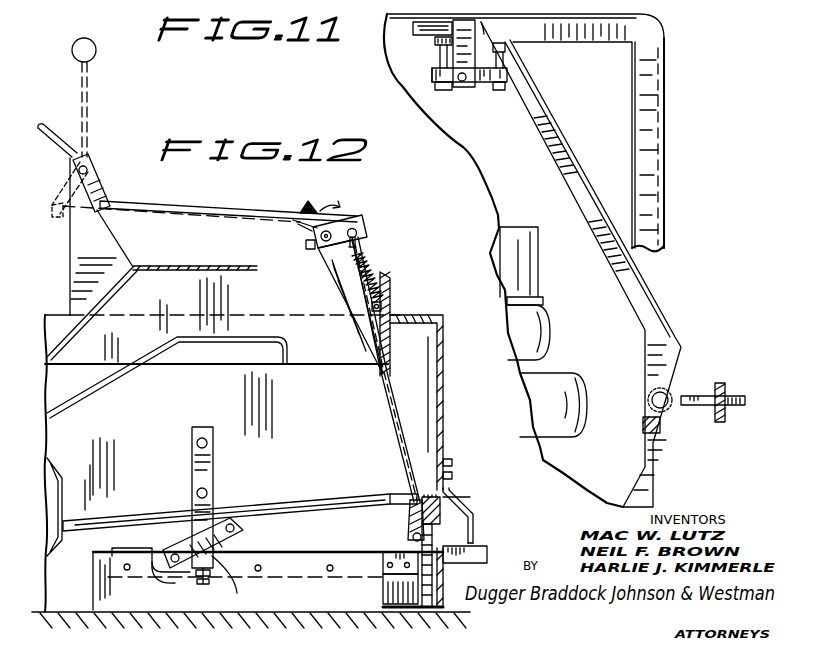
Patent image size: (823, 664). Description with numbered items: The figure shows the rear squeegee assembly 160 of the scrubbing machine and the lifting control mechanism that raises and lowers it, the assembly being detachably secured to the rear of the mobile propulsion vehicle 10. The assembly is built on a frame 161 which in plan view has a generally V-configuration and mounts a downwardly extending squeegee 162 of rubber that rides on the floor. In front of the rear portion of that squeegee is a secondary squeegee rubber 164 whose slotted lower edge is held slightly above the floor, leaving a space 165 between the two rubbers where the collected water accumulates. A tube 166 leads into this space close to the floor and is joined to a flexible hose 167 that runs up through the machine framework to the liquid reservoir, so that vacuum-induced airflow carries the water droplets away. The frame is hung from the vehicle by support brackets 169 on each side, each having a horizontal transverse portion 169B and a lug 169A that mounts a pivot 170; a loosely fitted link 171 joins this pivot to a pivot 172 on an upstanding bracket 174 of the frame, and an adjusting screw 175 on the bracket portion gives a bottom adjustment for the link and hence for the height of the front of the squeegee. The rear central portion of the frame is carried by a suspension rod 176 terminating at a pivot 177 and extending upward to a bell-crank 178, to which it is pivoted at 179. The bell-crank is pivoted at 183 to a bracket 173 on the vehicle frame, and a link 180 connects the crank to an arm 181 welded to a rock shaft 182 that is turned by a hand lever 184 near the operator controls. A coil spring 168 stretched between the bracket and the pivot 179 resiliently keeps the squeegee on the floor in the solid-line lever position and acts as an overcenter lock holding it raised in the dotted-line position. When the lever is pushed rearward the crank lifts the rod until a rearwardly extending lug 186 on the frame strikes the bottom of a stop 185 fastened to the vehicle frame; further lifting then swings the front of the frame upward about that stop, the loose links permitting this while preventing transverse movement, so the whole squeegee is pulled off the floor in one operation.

In FIG. 12, the mobile propulsion vehicle 10 is at (163, 198).
In FIG. 11, the squeegee assembly 160 is at (588, 151).
In FIG. 12, the frame 161 is at (320, 550).
In FIG. 12, the squeegee 162 is at (97, 592).
In FIG. 12, the secondary squeegee rubber 164 is at (383, 596).
In FIG. 12, the space 165 is at (393, 583).
In FIG. 12, the tube 166 is at (440, 507).
In FIG. 11, the tube 166 is at (670, 392).
In FIG. 12, the flexible hose 167 is at (448, 482).
In FIG. 12, the coil spring 168 is at (373, 267).
In FIG. 12, the support bracket 169 is at (192, 458).
In FIG. 12, the lug 169A is at (185, 575).
In FIG. 11, the lug 169A is at (437, 37).
In FIG. 12, the horizontal transverse portion 169B is at (230, 578).
In FIG. 11, the horizontal transverse portion 169B is at (468, 60).
In FIG. 12, the pivot 170 is at (157, 572).
In FIG. 11, the pivot 170 is at (433, 80).
In FIG. 12, the link 171 is at (218, 527).
In FIG. 11, the link 171 is at (432, 75).
In FIG. 12, the pivot 172 is at (228, 545).
In FIG. 11, the pivot 172 is at (505, 61).
In FIG. 12, the bracket 173 is at (343, 292).
In FIG. 12, the upstanding bracket 174 is at (240, 550).
In FIG. 11, the upstanding bracket 174 is at (505, 48).
In FIG. 12, the adjusting screw 175 is at (232, 575).
In FIG. 12, the suspension rod 176 is at (387, 400).
In FIG. 12, the pivot 177 is at (412, 537).
In FIG. 11, the pivot 177 is at (660, 428).
In FIG. 12, the bell-crank 178 is at (350, 213).
In FIG. 12, the pivot 179 is at (358, 235).
In FIG. 12, the link 180 is at (188, 212).
In FIG. 12, the arm 181 is at (92, 210).
In FIG. 12, the rock shaft 182 is at (92, 165).
In FIG. 12, the pivot 183 is at (312, 244).
In FIG. 12, the hand lever 184 is at (48, 127).
In FIG. 12, the stop 185 is at (470, 500).
In FIG. 11, the stop 185 is at (723, 393).
In FIG. 12, the lug 186 is at (482, 555).
In FIG. 11, the lug 186 is at (744, 404).